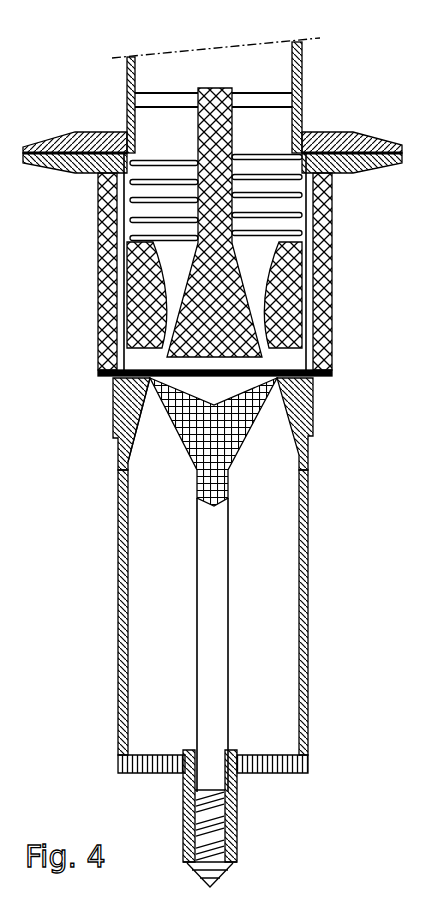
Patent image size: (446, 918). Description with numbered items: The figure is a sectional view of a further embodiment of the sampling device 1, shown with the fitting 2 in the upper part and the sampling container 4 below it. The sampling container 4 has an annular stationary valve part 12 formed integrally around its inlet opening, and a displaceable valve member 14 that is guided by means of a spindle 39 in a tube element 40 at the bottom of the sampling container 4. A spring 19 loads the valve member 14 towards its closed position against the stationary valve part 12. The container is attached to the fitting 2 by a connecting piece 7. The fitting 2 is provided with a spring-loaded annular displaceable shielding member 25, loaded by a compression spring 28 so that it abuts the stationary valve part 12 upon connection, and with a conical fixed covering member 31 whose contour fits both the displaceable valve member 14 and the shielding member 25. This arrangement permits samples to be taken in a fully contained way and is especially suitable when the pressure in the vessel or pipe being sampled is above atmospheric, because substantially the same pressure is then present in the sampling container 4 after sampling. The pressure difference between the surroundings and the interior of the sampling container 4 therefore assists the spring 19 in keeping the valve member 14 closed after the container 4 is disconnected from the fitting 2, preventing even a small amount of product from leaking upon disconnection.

The sampling device 1 is at (203, 632).
The fitting 2 is at (318, 250).
The sampling container 4 is at (116, 664).
The connecting piece 7 is at (98, 429).
The stationary valve part 12 is at (298, 392).
The displaceable valve member 14 is at (175, 425).
The spring 19 is at (237, 805).
The shielding member 25 is at (308, 287).
The compression spring 28 is at (268, 152).
The covering member 31 is at (165, 355).
The spindle 39 is at (210, 625).
The tube element 40 is at (185, 807).